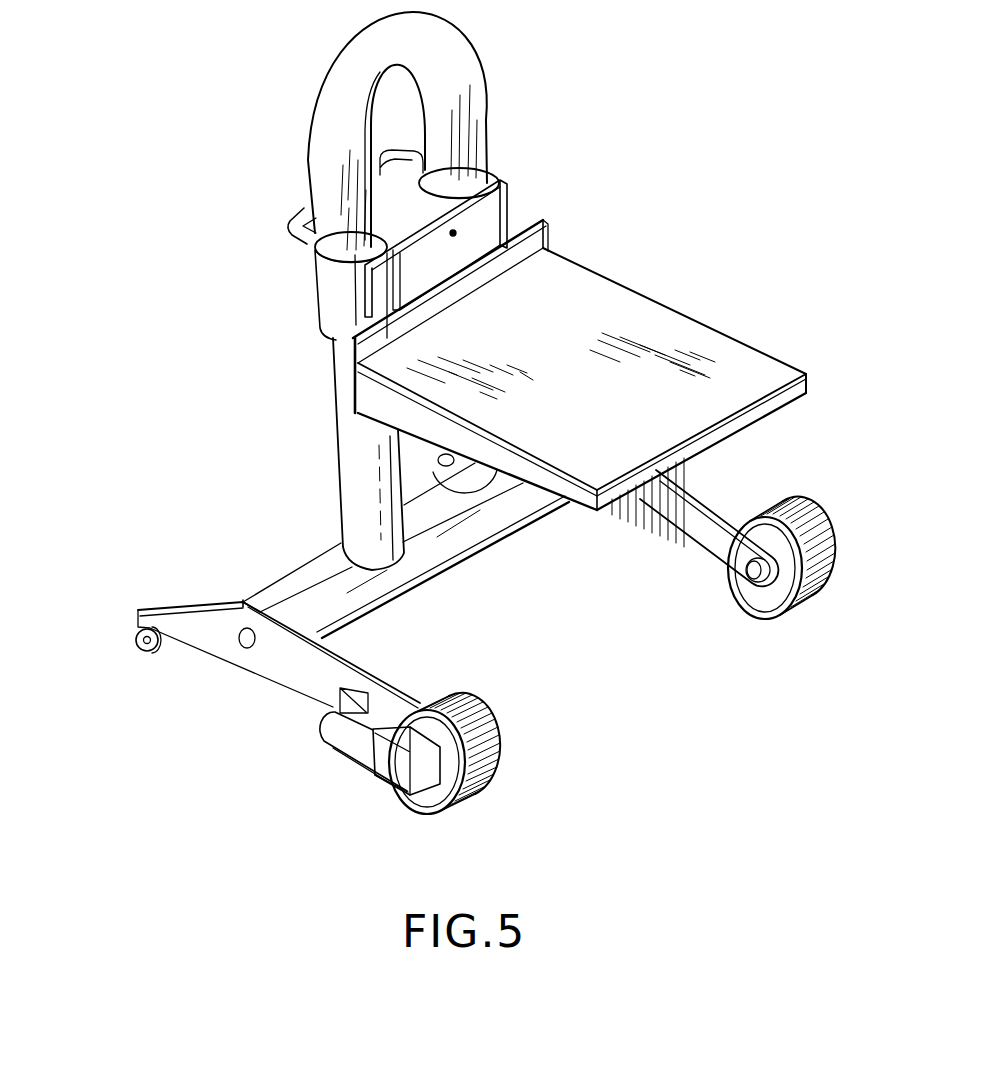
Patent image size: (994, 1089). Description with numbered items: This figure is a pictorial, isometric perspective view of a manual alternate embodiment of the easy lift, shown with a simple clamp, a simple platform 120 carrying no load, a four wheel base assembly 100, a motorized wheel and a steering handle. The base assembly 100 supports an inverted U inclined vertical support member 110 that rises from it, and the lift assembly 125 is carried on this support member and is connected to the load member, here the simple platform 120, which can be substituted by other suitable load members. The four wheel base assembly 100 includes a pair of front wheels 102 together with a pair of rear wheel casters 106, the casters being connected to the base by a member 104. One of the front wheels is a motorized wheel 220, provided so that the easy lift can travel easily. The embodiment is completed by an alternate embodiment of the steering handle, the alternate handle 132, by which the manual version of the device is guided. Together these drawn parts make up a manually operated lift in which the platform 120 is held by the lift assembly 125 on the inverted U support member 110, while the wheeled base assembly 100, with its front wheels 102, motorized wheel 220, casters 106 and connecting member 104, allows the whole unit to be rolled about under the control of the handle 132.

The base assembly 100 is at (465, 532).
The front wheels 102 is at (473, 710).
The member 104 is at (270, 663).
The rear wheel casters 106 is at (135, 650).
The inverted U inclined vertical support member 110 is at (472, 52).
The platform 120 is at (746, 352).
The lift assembly 125 is at (508, 220).
The alternate handle 132 is at (303, 209).
The motorized front wheel 220 is at (353, 758).